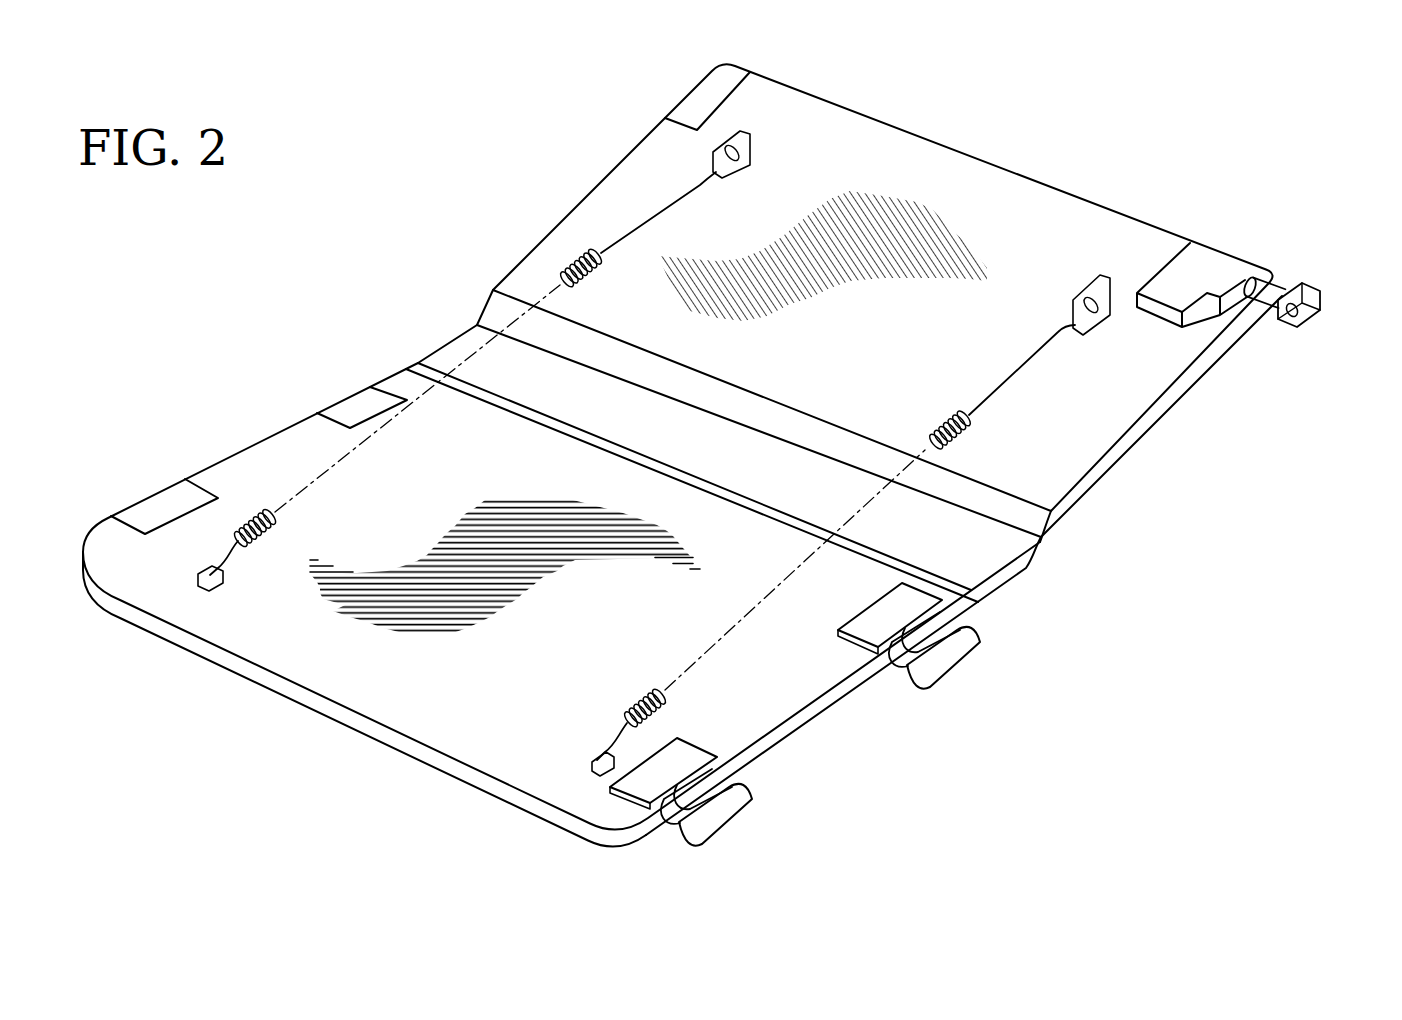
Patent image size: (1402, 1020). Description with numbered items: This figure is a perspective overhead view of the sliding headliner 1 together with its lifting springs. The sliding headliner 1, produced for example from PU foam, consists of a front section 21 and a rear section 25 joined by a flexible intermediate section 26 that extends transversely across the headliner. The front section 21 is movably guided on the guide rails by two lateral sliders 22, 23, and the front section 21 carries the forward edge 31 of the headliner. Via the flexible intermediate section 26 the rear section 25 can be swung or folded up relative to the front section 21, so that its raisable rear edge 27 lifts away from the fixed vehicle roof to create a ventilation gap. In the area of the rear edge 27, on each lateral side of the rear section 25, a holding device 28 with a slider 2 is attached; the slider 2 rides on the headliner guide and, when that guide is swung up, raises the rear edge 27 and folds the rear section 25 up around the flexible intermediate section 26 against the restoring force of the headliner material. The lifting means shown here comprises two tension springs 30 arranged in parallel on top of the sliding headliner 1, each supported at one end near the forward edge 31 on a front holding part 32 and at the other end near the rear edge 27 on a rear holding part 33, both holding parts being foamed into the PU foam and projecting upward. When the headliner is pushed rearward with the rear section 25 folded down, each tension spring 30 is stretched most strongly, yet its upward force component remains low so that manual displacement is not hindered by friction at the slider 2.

The sliding headliner 1 is at (739, 466).
The slider 2 is at (1313, 281).
The front section 21 is at (773, 693).
The lateral slider 22 is at (157, 505).
The lateral slider 23 is at (347, 403).
The rear section 25 is at (1113, 392).
The flexible intermediate section 26 is at (1022, 568).
The rear edge 27 is at (980, 195).
The holding device 28 is at (695, 98).
The tension spring 30 is at (490, 334).
The forward edge 31 is at (440, 730).
The front holding part 32 is at (597, 770).
The rear holding part 33 is at (1110, 287).